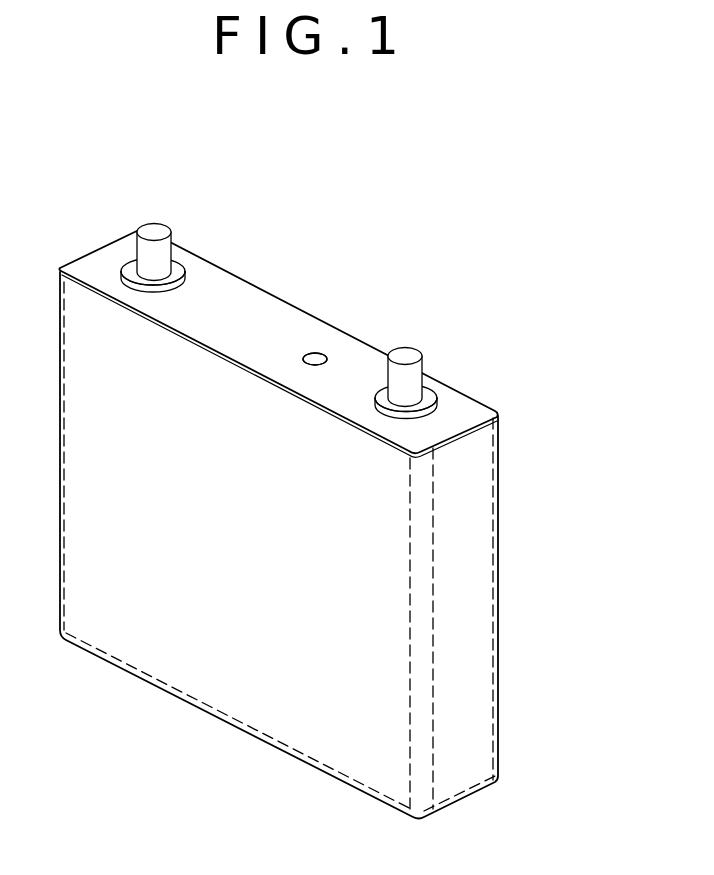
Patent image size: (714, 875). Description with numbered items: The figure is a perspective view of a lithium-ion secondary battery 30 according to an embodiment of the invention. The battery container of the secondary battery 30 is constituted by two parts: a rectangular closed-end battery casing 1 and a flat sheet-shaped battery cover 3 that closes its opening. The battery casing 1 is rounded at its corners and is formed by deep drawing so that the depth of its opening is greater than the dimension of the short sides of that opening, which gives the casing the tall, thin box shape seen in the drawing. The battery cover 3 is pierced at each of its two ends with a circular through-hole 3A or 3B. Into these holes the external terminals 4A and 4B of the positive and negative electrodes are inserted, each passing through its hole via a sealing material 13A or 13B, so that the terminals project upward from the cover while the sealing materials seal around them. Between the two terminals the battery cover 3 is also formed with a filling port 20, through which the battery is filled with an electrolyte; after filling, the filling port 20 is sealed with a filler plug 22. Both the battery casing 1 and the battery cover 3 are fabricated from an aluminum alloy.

The battery casing 1 is at (219, 538).
The battery cover 3 is at (105, 247).
The circular through-hole 3A is at (140, 297).
The circular through-hole 3B is at (393, 421).
The external terminal 4A is at (164, 227).
The external terminal 4B is at (420, 350).
The sealing material 13A is at (186, 262).
The sealing material 13B is at (438, 386).
The filling port 20 is at (319, 352).
The filler plug 22 is at (315, 359).
The lithium-ion secondary battery 30 is at (318, 228).